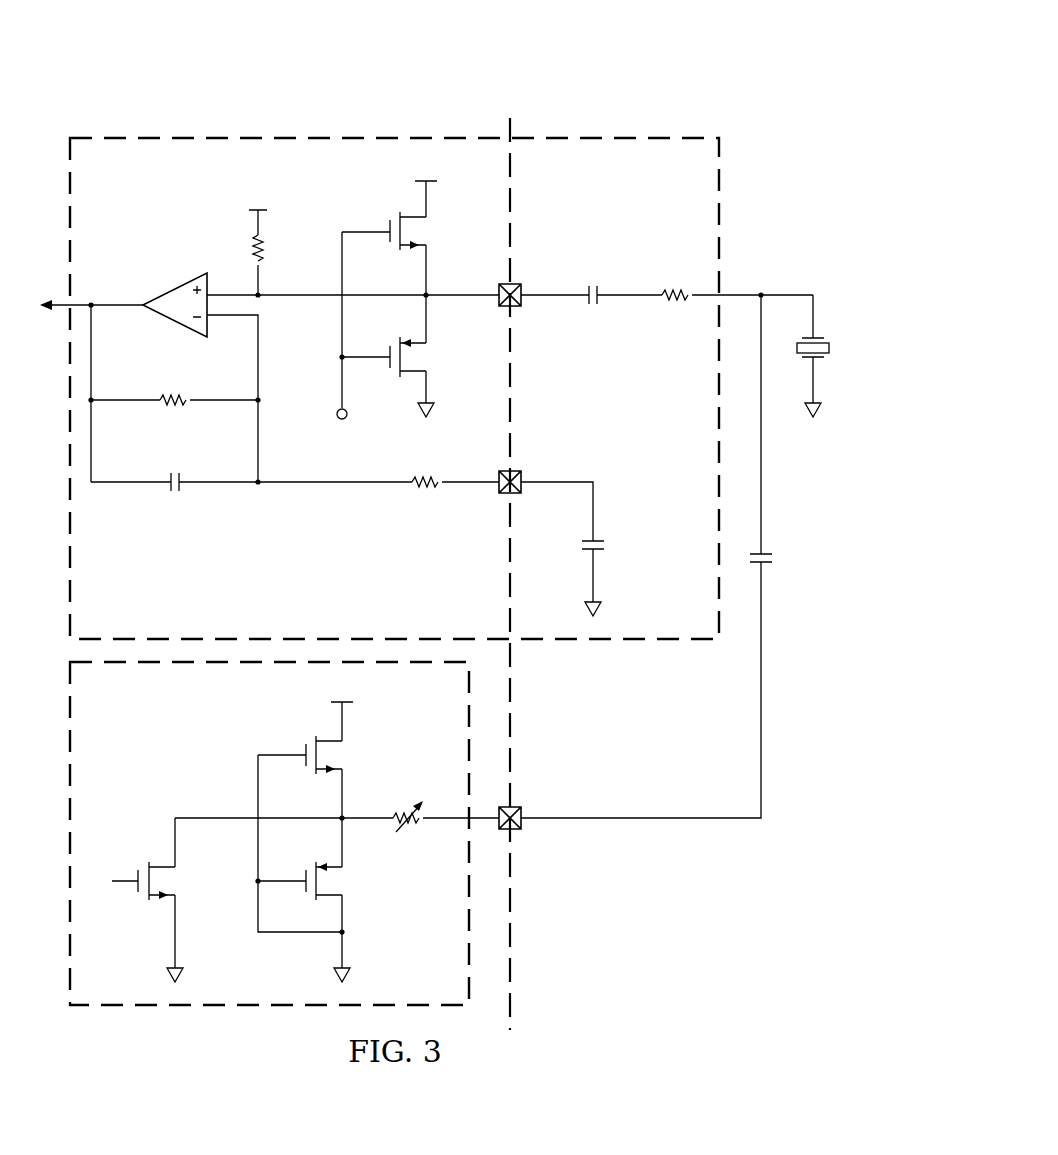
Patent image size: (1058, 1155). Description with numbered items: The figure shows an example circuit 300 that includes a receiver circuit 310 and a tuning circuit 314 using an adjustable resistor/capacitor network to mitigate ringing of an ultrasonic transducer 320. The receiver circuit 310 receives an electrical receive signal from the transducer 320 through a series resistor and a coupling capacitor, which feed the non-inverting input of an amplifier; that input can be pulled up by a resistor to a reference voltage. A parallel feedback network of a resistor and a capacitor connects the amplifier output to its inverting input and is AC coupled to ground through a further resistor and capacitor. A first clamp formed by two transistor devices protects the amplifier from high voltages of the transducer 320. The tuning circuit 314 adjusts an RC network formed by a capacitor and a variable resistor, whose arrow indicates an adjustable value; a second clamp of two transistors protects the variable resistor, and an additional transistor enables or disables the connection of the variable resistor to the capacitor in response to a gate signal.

The circuit 300 is at (526, 68).
The receiver circuit 310 is at (242, 131).
The tuning circuit 314 is at (243, 1016).
The ultrasonic transducer 320 is at (831, 345).